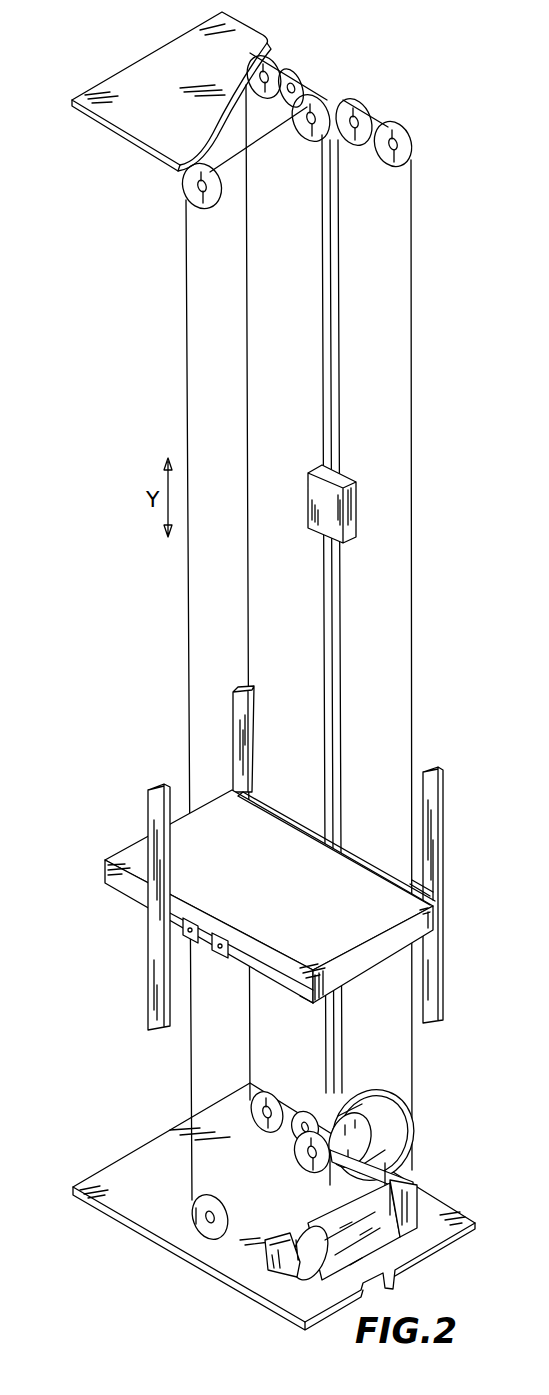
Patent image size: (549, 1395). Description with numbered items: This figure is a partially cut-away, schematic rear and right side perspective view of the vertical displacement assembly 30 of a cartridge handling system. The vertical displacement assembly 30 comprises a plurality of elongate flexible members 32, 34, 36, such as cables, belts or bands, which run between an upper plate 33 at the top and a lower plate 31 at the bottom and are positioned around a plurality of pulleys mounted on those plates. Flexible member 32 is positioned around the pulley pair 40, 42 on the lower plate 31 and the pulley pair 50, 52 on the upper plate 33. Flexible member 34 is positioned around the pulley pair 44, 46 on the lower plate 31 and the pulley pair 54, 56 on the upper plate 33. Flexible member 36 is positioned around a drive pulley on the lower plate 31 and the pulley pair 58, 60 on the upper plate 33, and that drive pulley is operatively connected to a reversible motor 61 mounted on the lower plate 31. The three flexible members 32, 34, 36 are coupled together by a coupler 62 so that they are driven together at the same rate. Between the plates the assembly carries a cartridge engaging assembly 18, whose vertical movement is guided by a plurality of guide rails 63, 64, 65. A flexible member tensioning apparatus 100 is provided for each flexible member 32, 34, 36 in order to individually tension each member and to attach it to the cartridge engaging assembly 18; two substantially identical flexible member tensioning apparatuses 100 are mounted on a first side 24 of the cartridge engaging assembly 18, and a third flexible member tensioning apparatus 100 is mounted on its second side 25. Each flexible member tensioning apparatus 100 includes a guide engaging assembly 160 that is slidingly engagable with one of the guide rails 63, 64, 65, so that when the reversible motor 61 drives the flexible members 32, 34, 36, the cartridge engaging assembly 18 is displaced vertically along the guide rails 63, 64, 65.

The vertical displacement assembly 30 is at (98, 46).
The upper plate 33 is at (180, 38).
The pulley 50 is at (270, 53).
The pulley 52 is at (305, 72).
The pulley 56 is at (308, 136).
The pulley 58 is at (345, 100).
The pulley 60 is at (390, 127).
The pulley 54 is at (186, 190).
The elongate flexible member 32 is at (247, 284).
The elongate flexible member 34 is at (332, 580).
The elongate flexible member 36 is at (414, 306).
The coupler 62 is at (343, 482).
The cartridge engaging assembly 18 is at (120, 826).
The first side 24 is at (338, 848).
The guide rail 63 is at (254, 716).
The guide rail 65 is at (443, 816).
The guide rail 64 is at (150, 938).
The flexible member tensioning apparatus 100 is at (270, 806).
The guide engaging assembly 160 is at (198, 918).
The second side 25 is at (306, 1006).
The lower plate 31 is at (105, 1176).
The pulley 40 is at (262, 1092).
The pulley 42 is at (303, 1112).
The pulley 46 is at (295, 1158).
The pulley 44 is at (197, 1212).
The reversible motor 61 is at (317, 1228).